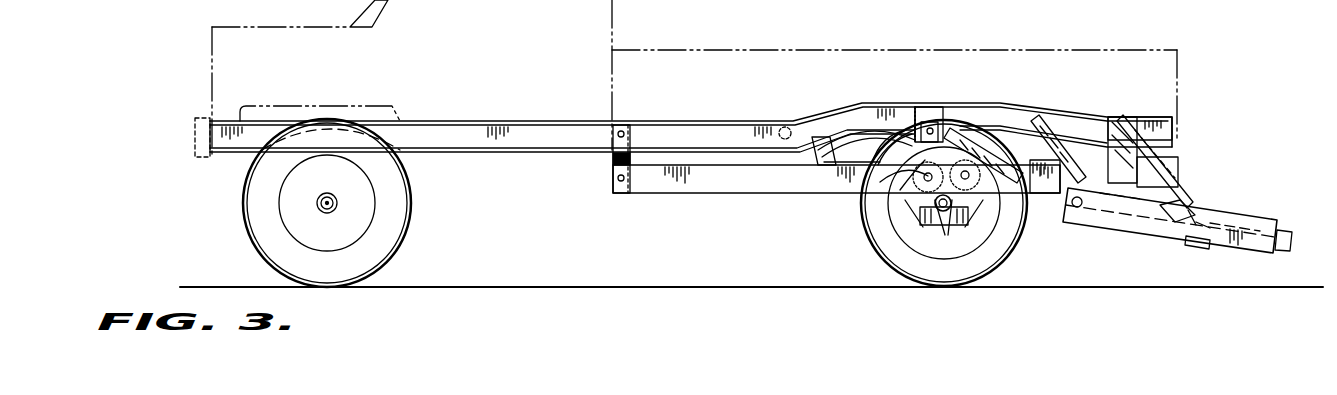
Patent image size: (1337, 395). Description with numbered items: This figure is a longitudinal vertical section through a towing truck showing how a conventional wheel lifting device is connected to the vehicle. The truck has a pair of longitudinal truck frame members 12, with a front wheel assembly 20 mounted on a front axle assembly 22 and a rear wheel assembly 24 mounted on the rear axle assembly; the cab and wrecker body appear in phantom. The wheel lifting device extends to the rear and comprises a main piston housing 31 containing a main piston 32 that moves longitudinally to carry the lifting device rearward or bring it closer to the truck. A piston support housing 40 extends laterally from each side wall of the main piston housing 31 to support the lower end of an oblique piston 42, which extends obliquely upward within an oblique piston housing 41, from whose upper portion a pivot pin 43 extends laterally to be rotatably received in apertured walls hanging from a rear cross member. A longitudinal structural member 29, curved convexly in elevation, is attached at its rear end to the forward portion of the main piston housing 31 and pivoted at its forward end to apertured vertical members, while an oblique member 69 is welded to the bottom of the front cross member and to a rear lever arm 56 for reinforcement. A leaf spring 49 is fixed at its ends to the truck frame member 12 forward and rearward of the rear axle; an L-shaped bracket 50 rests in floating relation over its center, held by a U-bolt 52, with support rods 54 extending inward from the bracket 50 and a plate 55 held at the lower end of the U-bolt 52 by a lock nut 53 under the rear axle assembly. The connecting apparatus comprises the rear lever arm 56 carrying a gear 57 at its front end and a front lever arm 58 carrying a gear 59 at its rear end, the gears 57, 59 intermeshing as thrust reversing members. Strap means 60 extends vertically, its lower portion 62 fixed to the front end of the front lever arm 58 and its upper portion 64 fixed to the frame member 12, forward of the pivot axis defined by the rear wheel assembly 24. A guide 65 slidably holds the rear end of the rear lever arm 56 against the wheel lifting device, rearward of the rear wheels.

The longitudinal truck frame member 12 is at (545, 121).
The front wheel assembly 20 is at (247, 233).
The front axle assembly 22 is at (341, 203).
The rear wheel assembly 24 is at (1006, 262).
The longitudinal structural member 29 is at (992, 155).
The main piston housing 31 is at (1256, 218).
The main piston 32 is at (1287, 236).
The piston support housing 40 is at (1195, 250).
The oblique piston housing 41 is at (1193, 189).
The oblique piston 42 is at (1196, 214).
The pivot pin 43 is at (1064, 220).
The leaf spring 49 is at (845, 148).
The L-shaped bracket 50 is at (953, 106).
The U-bolt 52 is at (900, 135).
The lock nut 53 is at (940, 226).
The support rod 54 is at (977, 189).
The plate 55 is at (915, 213).
The rear lever arm 56 is at (1054, 182).
The gear 57 is at (966, 216).
The front lever arm 58 is at (735, 186).
The gear 59 is at (915, 206).
The strap means 60 is at (619, 201).
The lower portion of strap means 62 is at (612, 178).
The upper portion of strap means 64 is at (633, 127).
The guide 65 is at (1176, 148).
The oblique member 69 is at (1010, 125).